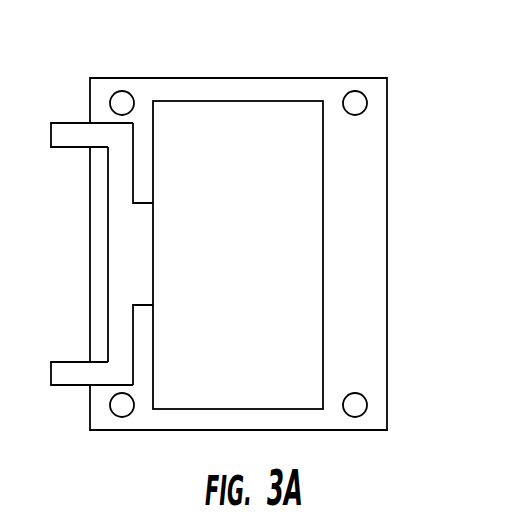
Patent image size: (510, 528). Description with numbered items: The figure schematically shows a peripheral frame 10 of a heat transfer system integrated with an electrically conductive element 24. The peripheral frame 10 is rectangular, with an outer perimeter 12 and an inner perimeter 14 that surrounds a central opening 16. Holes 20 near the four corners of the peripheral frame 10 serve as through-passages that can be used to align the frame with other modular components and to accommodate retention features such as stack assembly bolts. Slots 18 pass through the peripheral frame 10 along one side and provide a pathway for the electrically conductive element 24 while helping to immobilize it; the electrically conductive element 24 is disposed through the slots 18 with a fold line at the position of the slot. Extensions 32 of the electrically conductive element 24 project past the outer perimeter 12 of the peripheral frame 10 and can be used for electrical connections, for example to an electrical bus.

The peripheral frame 10 is at (185, 82).
The outer perimeter 12 is at (93, 222).
The inner perimeter 14 is at (322, 278).
The central opening 16 is at (242, 110).
The slots 18 is at (135, 160).
The holes 20 is at (122, 103).
The electrically conductive element 24 is at (122, 254).
The extensions 32 is at (65, 140).